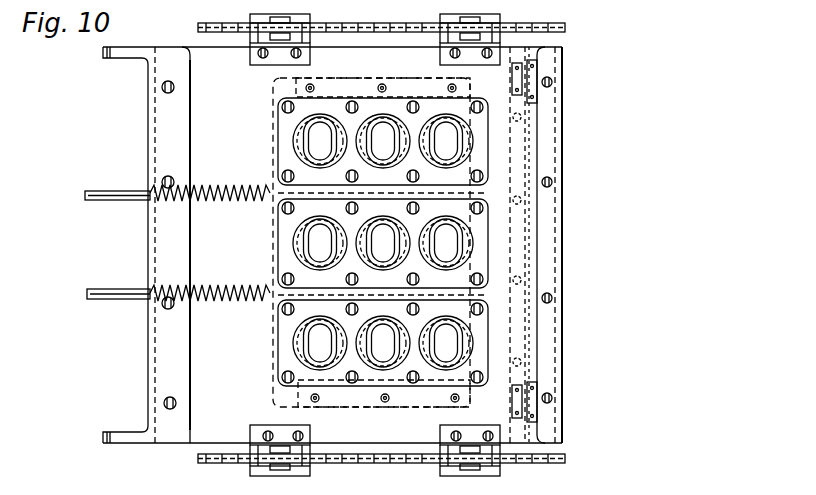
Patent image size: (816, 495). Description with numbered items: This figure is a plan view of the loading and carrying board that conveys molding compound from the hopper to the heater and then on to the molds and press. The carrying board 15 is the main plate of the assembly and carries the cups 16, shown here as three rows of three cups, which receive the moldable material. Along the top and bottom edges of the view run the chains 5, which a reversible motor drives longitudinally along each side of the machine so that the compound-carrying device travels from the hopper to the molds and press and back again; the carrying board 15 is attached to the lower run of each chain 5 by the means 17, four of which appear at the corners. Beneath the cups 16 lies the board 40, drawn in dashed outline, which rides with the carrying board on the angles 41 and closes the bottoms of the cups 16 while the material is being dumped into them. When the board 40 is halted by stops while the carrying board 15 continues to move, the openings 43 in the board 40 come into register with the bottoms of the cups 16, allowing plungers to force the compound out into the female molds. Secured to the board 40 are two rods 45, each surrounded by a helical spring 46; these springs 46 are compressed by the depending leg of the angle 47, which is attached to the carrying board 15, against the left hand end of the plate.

The chains 5 is at (548, 27).
The carrying board 15 is at (205, 125).
The cups 16 is at (322, 133).
The attaching means 17 is at (256, 59).
The board 40 is at (273, 97).
The angles 41 is at (372, 73).
The openings 43 is at (448, 89).
The rods 45 is at (122, 191).
The helical springs 46 is at (243, 186).
The angle 47 is at (168, 352).